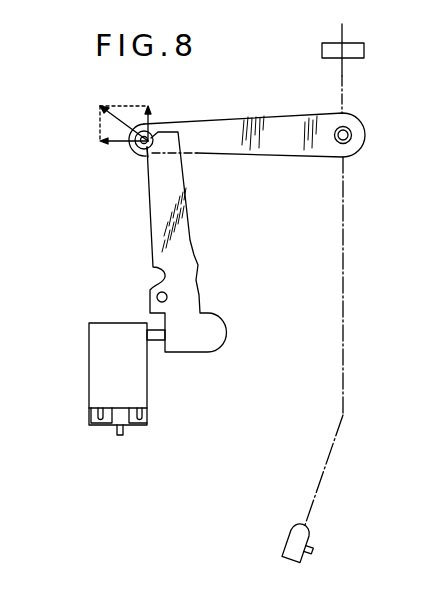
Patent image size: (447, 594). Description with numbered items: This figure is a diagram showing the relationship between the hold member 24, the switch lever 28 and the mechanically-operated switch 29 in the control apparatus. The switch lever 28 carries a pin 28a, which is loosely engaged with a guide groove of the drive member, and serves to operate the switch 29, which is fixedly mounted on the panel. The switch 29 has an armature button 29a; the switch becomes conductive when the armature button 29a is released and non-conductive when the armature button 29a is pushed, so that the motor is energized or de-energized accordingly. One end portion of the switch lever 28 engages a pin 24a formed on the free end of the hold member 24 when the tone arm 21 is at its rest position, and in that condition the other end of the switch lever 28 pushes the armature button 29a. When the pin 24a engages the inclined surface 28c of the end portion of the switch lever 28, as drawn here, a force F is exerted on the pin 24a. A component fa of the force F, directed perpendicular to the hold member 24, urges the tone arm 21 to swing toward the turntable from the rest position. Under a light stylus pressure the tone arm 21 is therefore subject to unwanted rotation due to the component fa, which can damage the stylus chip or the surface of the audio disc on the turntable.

The tone arm 21 is at (340, 228).
The hold member 24 is at (245, 122).
The pin 24a is at (137, 147).
The switch lever 28 is at (181, 239).
The pin 28a is at (168, 297).
The inclined surface 28c is at (151, 158).
The mechanically-operated switch 29 is at (95, 360).
The armature button 29a is at (153, 328).
The force F is at (115, 120).
The component of the force fa is at (149, 105).